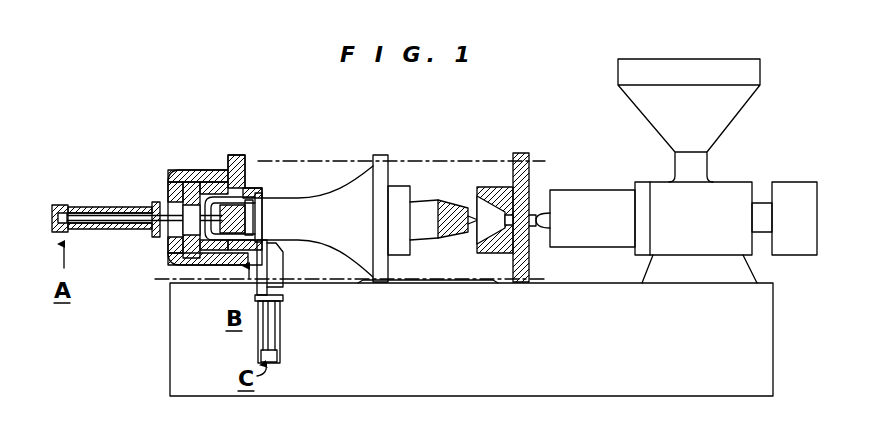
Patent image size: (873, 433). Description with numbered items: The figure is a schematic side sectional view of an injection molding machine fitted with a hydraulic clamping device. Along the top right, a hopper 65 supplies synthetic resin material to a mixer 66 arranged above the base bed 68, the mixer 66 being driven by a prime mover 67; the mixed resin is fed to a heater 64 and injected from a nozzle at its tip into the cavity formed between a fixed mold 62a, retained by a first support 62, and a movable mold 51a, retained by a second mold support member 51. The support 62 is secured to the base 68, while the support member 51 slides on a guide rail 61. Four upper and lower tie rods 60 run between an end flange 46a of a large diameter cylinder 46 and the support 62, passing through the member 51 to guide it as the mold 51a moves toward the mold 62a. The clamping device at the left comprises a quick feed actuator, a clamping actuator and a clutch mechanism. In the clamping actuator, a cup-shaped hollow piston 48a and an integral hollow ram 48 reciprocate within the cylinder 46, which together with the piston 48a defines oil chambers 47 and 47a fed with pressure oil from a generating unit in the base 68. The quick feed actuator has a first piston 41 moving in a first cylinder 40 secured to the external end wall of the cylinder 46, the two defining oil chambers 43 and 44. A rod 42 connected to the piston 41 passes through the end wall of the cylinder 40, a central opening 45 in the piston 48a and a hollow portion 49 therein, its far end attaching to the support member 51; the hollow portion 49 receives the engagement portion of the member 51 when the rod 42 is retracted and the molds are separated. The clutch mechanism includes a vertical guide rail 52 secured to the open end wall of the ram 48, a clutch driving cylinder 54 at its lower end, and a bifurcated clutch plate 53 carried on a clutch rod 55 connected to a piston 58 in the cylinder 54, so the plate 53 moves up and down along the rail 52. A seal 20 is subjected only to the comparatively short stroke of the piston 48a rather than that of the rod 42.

The seal 20 is at (186, 195).
The first cylinder 40 is at (97, 229).
The first piston 41 is at (68, 210).
The rod 42 is at (122, 229).
The oil chamber 43 is at (52, 212).
The oil chamber 44 is at (128, 207).
The central opening 45 is at (163, 240).
The large diameter cylinder 46 is at (193, 168).
The end flange 46a is at (234, 155).
The oil chamber 47 is at (185, 190).
The oil chamber 47a is at (205, 178).
The hollow ram 48 is at (255, 190).
The cup-shaped hollow piston 48a is at (184, 268).
The hollow portion 49 is at (232, 268).
The second mold support member 51 is at (385, 158).
The movable mold 51a is at (399, 195).
The vertical guide rail 52 is at (251, 292).
The bifurcated clutch plate 53 is at (283, 262).
The clutch driving cylinder 54 is at (280, 337).
The clutch rod 55 is at (283, 299).
The piston 58 is at (276, 352).
The tie rods 60 is at (355, 160).
The guide rail 61 is at (476, 286).
The first support 62 is at (522, 165).
The fixed mold 62a is at (492, 198).
The heater 64 is at (605, 228).
The hopper 65 is at (652, 117).
The mixer 66 is at (740, 190).
The prime mover 67 is at (797, 190).
The base bed 68 is at (612, 358).